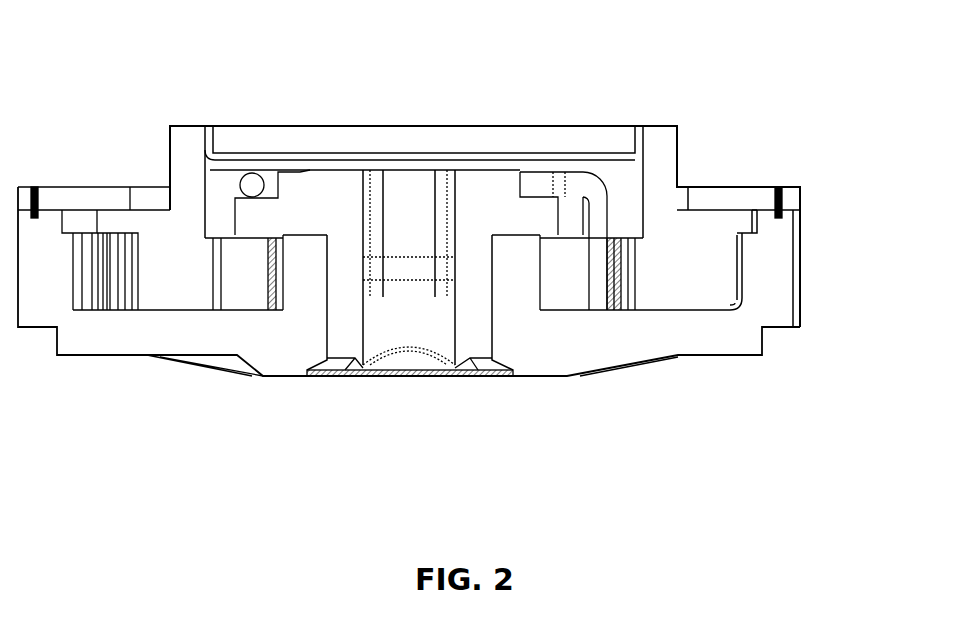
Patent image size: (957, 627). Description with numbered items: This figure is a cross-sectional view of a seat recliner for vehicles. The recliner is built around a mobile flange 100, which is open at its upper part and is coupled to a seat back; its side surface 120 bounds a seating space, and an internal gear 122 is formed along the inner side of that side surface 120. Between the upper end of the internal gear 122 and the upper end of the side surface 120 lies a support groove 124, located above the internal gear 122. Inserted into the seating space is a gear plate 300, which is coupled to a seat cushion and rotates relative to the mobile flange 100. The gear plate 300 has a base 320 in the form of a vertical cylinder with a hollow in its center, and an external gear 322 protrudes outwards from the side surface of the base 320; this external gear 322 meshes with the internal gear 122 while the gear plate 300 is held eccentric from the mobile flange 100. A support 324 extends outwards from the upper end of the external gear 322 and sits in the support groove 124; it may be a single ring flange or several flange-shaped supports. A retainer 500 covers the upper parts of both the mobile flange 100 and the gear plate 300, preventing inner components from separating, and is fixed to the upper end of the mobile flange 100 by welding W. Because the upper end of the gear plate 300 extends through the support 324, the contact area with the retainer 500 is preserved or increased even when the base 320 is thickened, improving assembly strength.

The mobile flange 100 is at (187, 340).
The side surface 120 is at (773, 272).
The internal gear 122 is at (733, 305).
The support groove 124 is at (755, 236).
The gear plate 300 is at (157, 232).
The base 320 is at (663, 140).
The external gear 322 is at (745, 263).
The support 324 is at (745, 222).
The retainer 500 is at (703, 198).
The welding W is at (785, 188).